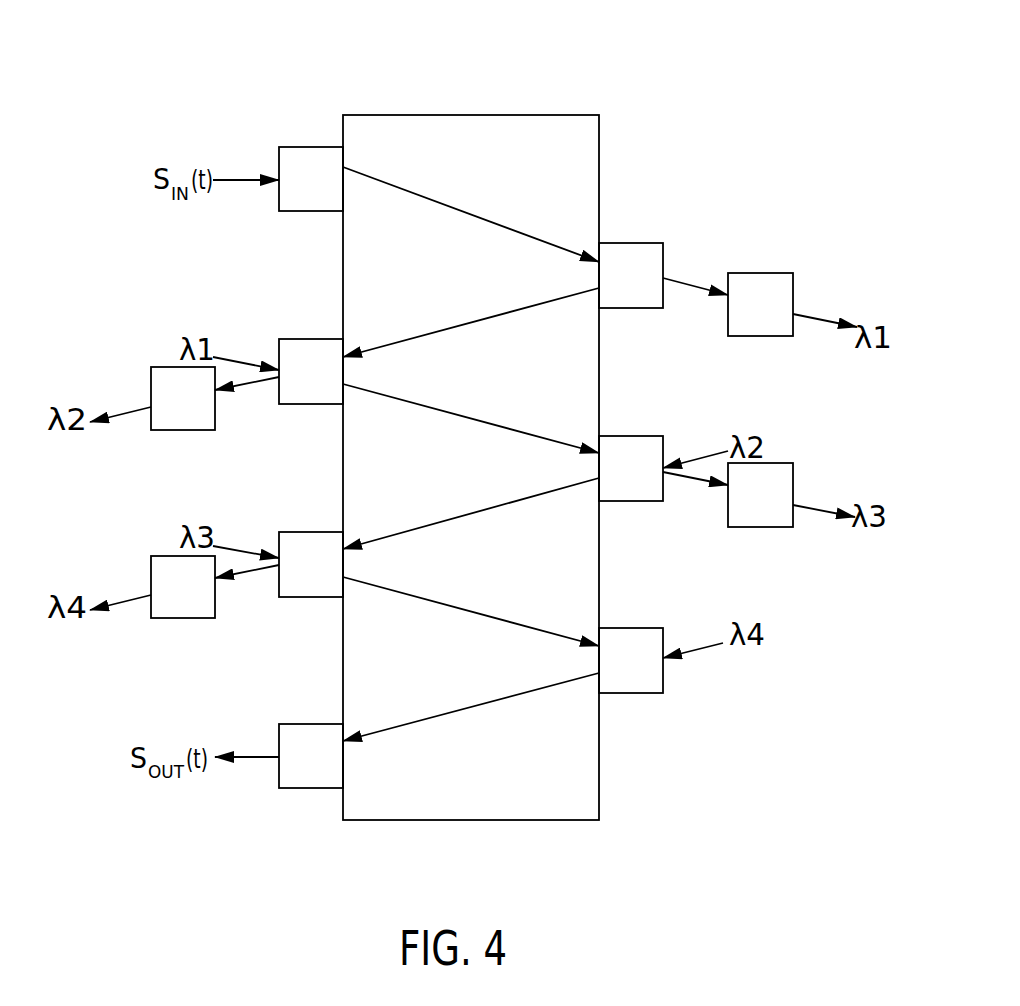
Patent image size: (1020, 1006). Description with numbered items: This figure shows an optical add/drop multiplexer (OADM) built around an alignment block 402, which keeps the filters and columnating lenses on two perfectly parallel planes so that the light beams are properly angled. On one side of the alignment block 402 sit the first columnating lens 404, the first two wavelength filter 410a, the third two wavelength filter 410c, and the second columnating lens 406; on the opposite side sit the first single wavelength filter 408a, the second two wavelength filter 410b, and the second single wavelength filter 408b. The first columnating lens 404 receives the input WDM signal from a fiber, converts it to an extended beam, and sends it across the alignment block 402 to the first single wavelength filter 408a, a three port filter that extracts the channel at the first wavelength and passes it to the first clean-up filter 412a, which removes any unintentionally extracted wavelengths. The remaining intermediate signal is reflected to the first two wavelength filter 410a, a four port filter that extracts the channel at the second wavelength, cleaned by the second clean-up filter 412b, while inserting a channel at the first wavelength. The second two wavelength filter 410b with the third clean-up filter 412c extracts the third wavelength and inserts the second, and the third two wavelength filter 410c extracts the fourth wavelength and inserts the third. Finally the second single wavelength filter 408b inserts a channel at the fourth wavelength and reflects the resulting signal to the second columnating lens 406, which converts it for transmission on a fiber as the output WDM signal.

The alignment block 402 is at (465, 115).
The first columnating lens 404 is at (302, 147).
The second columnating lens 406 is at (302, 724).
The first single wavelength filter 408a is at (635, 243).
The second single wavelength filter 408b is at (635, 628).
The first two wavelength filter 410a is at (302, 339).
The second two wavelength filter 410b is at (635, 436).
The third two wavelength filter 410c is at (302, 532).
The first clean-up filter 412a is at (762, 273).
The second clean-up filter 412b is at (153, 367).
The third clean-up filter 412c is at (790, 463).